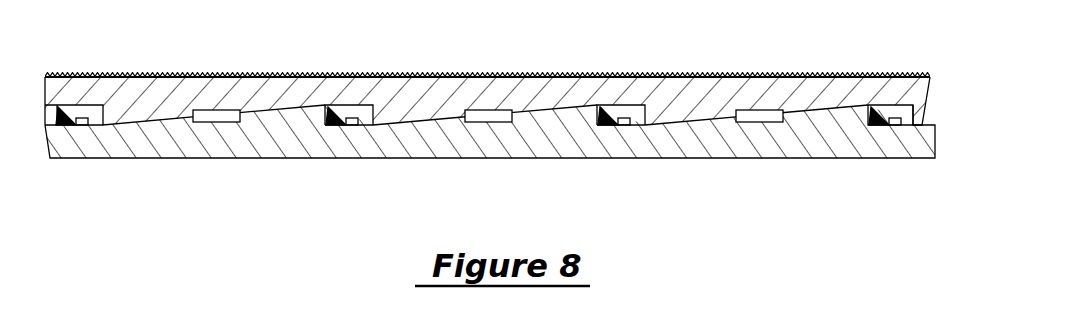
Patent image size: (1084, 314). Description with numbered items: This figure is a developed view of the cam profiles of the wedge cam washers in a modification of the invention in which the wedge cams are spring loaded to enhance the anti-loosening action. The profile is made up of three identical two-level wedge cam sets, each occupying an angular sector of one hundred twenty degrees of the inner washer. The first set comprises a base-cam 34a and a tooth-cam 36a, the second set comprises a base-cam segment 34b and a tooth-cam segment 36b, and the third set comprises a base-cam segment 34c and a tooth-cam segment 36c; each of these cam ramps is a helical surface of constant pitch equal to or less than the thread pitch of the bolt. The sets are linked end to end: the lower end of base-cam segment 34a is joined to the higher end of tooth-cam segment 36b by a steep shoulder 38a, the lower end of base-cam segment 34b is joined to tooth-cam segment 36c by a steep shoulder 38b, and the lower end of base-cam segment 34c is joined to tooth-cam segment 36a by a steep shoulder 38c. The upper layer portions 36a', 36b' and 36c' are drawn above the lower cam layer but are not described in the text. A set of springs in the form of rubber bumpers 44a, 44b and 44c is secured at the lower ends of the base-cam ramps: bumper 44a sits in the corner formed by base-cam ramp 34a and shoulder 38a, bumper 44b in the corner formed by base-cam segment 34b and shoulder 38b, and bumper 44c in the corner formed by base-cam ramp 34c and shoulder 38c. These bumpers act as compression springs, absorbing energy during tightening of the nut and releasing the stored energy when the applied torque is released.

The base-cam 34a is at (102, 126).
The base-cam segment 34b is at (640, 126).
The base-cam segment 34c is at (370, 126).
The tooth-cam 36a is at (185, 164).
The tooth-cam segment 36b is at (790, 162).
The tooth-cam segment 36c is at (485, 163).
The upper layer of panel a 36a' is at (185, 76).
The upper layer of panel b 36b' is at (787, 76).
The upper layer of panel c 36c' is at (485, 76).
The steep shoulder 38a is at (852, 120).
The steep shoulder 38b is at (573, 114).
The steep shoulder 38c is at (295, 118).
The rubber bumper 44a is at (60, 107).
The rubber bumper 44b is at (608, 108).
The rubber bumper 44c is at (337, 108).